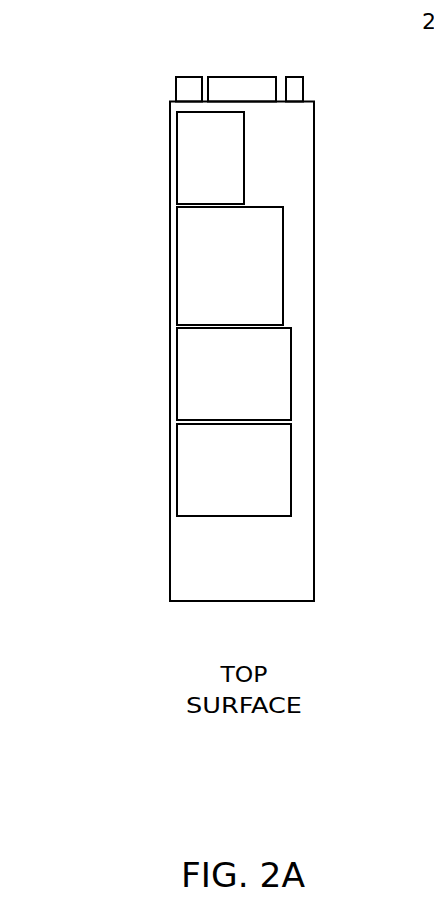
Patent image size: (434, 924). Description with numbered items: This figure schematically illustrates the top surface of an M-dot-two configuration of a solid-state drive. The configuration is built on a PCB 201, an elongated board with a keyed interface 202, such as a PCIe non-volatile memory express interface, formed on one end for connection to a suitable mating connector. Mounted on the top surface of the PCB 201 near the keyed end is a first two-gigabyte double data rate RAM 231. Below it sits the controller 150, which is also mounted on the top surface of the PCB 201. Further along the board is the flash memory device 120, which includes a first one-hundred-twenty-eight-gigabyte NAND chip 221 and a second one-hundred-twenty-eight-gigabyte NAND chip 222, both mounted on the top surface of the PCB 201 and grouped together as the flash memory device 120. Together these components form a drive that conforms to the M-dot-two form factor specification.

The PCB 201 is at (169, 248).
The keyed interface 202 is at (190, 76).
The first DDR RAM 231 is at (189, 169).
The controller 150 is at (209, 278).
The flash memory device 120 is at (165, 422).
The first NAND chip 221 is at (212, 386).
The second NAND chip 222 is at (234, 470).